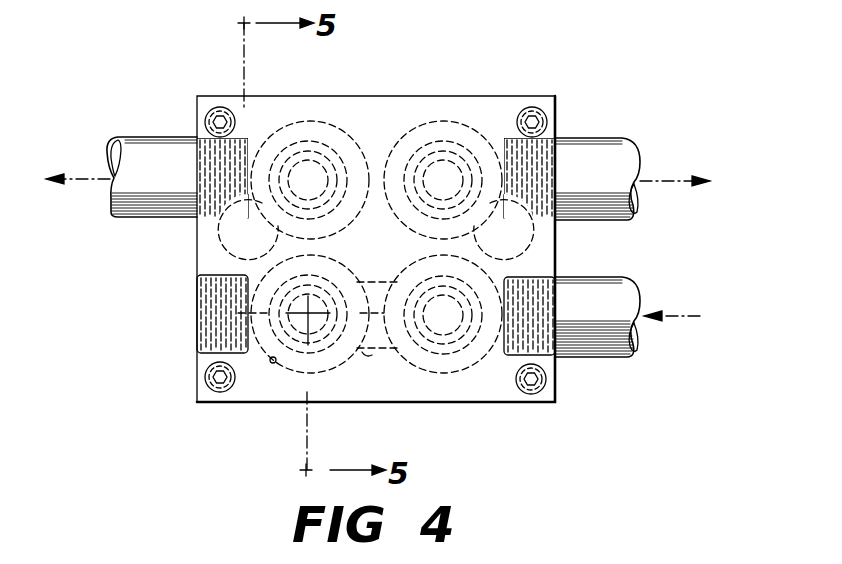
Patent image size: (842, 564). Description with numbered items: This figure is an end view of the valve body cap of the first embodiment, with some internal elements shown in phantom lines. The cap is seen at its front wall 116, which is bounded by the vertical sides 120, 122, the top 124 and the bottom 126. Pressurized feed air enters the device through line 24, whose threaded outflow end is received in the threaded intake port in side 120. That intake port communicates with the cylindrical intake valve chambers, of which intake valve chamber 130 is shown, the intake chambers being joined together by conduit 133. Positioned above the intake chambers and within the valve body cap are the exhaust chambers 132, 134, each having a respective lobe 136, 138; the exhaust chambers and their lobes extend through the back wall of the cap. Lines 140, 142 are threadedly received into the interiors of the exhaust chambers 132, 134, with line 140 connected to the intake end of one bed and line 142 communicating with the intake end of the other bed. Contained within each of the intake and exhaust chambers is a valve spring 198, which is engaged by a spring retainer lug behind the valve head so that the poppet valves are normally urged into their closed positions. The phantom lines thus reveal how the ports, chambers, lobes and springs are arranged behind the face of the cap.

The line 24 is at (588, 342).
The front wall 116 is at (300, 108).
The vertical side 120 is at (557, 250).
The vertical side 122 is at (197, 362).
The top 124 is at (420, 98).
The bottom 126 is at (236, 402).
The intake valve chamber 130 is at (273, 366).
The exhaust chamber 132 is at (480, 108).
The conduit 133 is at (363, 356).
The exhaust chamber 134 is at (338, 110).
The lobe 136 is at (522, 238).
The lobe 138 is at (222, 234).
The line 140 is at (588, 150).
The line 142 is at (131, 148).
The valve spring 198 is at (418, 150).